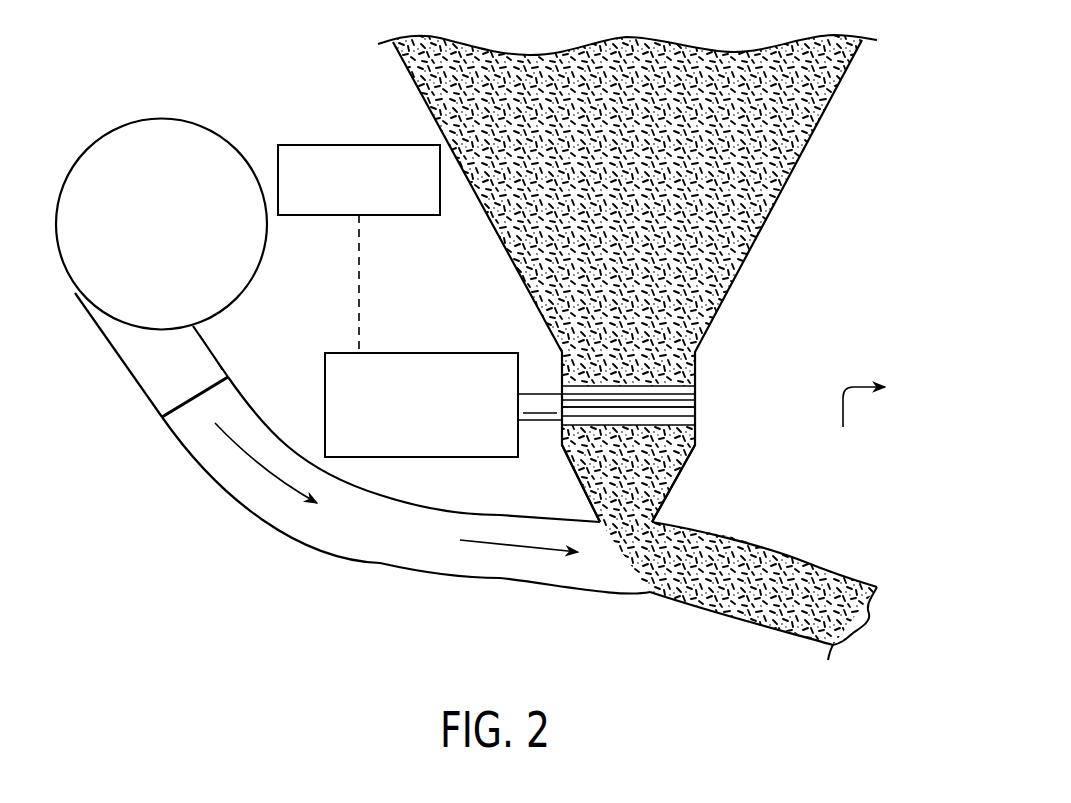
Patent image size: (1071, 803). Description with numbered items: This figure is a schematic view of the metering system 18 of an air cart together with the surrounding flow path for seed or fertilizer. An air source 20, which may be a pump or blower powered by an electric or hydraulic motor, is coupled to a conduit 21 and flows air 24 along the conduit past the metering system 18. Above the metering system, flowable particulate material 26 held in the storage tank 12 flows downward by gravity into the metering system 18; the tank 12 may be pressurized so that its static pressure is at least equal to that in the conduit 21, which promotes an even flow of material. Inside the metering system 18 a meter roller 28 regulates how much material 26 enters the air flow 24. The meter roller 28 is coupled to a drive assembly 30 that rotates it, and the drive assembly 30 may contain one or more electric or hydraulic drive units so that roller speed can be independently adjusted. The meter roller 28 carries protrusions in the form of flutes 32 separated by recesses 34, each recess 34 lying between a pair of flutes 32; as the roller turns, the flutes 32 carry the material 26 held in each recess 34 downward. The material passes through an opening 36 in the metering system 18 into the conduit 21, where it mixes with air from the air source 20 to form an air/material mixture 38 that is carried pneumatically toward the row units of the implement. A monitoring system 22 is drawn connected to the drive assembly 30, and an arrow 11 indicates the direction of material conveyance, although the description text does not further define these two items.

The conveying direction 11 is at (856, 424).
The storage tank 12 is at (420, 88).
The metering system 18 is at (687, 398).
The air source 20 is at (162, 118).
The conduit 21 is at (350, 555).
The monitoring system 22 is at (358, 145).
The air flow 24 is at (257, 467).
The flowable particulate material 26 is at (807, 102).
The meter roller 28 is at (660, 435).
The drive assembly 30 is at (422, 353).
The flutes 32 is at (665, 403).
The recesses 34 is at (688, 417).
The opening 36 is at (635, 522).
The air/material mixture 38 is at (760, 600).